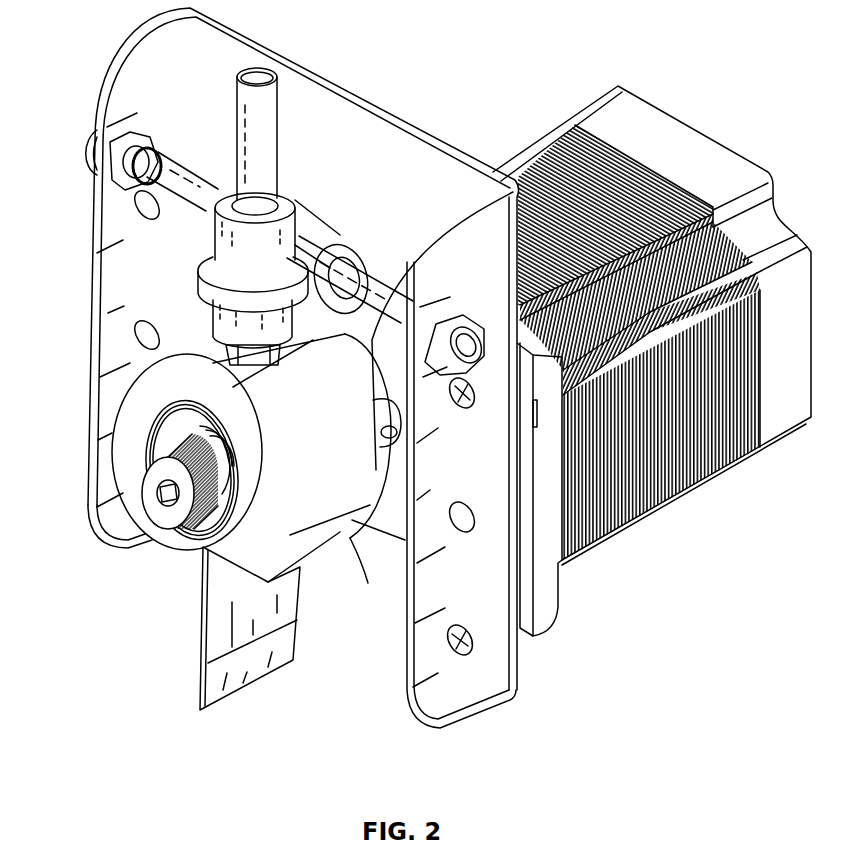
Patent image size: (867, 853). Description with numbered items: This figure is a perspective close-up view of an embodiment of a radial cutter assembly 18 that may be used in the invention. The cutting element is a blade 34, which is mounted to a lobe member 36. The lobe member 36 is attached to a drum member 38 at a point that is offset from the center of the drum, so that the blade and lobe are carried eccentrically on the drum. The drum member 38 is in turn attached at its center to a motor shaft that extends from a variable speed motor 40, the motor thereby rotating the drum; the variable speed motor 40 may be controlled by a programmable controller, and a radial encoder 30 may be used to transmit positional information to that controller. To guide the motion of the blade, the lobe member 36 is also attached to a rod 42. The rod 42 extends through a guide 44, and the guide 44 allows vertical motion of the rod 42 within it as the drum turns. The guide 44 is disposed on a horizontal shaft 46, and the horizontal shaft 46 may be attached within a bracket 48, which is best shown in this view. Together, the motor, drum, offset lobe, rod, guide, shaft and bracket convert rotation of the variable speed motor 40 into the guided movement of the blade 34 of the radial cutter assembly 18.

The radial cutter assembly 18 is at (414, 38).
The radial encoder 30 is at (783, 452).
The blade 34 is at (203, 663).
The lobe member 36 is at (352, 522).
The drum member 38 is at (367, 583).
The variable speed motor 40 is at (628, 560).
The rod 42 is at (285, 110).
The guide 44 is at (233, 230).
The horizontal shaft 46 is at (370, 262).
The bracket 48 is at (475, 683).